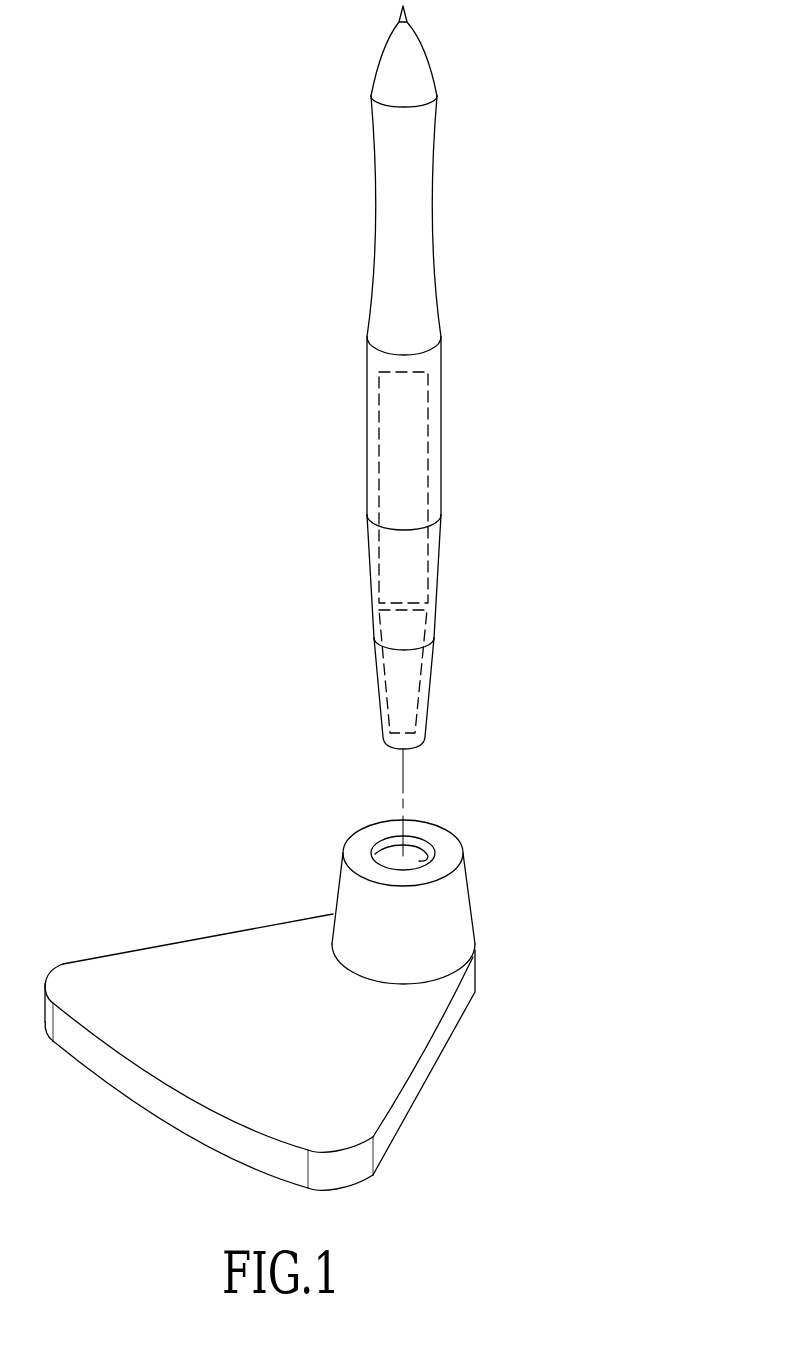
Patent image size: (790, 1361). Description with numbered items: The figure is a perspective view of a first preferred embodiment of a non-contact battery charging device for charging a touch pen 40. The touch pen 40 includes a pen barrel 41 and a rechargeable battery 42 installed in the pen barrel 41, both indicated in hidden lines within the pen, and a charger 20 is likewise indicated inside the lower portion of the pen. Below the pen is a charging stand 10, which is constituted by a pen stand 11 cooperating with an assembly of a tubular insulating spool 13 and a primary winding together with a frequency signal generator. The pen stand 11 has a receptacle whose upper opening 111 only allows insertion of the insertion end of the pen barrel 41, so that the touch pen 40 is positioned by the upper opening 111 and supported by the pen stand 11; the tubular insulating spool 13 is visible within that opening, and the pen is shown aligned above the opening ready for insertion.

The charging stand 10 is at (271, 965).
The pen stand 11 is at (312, 917).
The tubular insulating spool 13 is at (421, 848).
The upper opening 111 is at (384, 841).
The charger 20 is at (371, 688).
The touch pen 40 is at (353, 377).
The pen barrel 41 is at (369, 385).
The rechargeable battery 42 is at (377, 477).